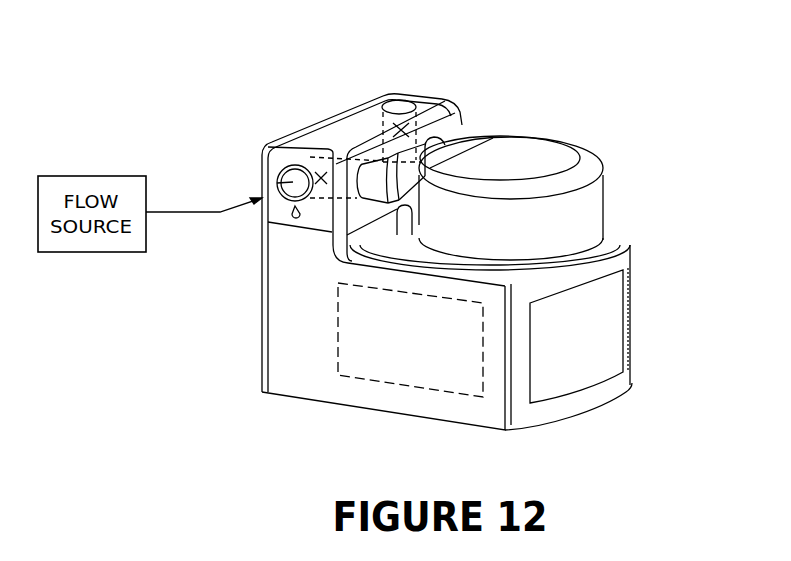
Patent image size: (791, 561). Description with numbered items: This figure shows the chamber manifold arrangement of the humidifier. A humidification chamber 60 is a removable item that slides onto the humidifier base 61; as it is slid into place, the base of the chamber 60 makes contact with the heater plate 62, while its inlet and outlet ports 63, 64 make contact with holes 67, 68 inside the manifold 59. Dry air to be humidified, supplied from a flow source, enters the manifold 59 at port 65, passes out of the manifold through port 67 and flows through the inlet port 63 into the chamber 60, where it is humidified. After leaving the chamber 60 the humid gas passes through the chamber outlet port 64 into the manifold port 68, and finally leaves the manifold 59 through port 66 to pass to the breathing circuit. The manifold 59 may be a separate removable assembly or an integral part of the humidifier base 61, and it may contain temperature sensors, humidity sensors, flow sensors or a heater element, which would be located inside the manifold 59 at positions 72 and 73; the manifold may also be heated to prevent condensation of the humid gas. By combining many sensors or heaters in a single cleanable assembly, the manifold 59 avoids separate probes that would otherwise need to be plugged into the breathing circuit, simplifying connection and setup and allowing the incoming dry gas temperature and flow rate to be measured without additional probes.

The manifold 59 is at (405, 117).
The humidification chamber 60 is at (556, 162).
The humidifier base 61 is at (322, 342).
The heater plate 62 is at (618, 243).
The inlet port 63 is at (360, 160).
The outlet port 64 is at (478, 165).
The port 65 is at (277, 187).
The port 66 is at (403, 104).
The hole 67 is at (343, 162).
The hole 68 is at (452, 135).
The position 72 is at (300, 150).
The position 73 is at (412, 132).